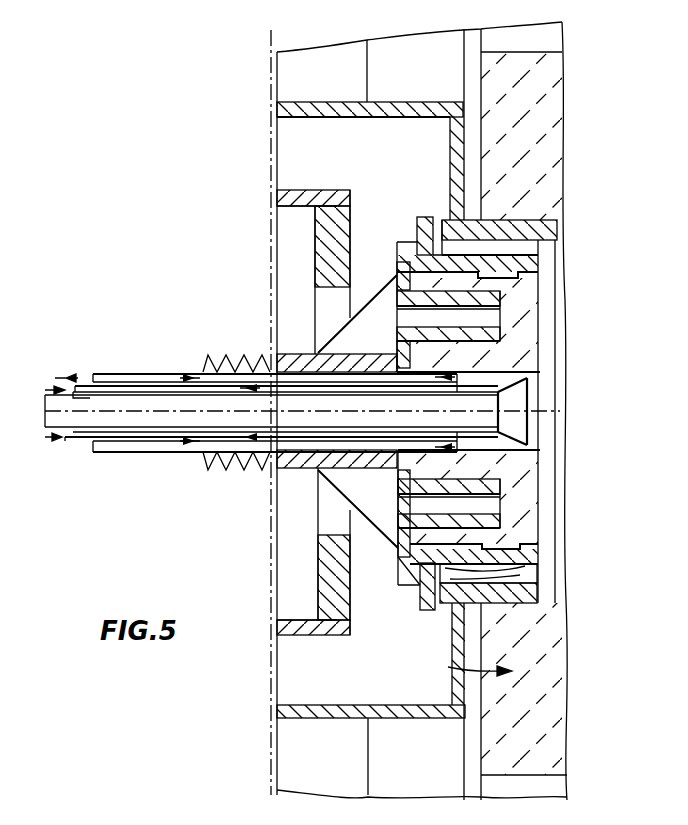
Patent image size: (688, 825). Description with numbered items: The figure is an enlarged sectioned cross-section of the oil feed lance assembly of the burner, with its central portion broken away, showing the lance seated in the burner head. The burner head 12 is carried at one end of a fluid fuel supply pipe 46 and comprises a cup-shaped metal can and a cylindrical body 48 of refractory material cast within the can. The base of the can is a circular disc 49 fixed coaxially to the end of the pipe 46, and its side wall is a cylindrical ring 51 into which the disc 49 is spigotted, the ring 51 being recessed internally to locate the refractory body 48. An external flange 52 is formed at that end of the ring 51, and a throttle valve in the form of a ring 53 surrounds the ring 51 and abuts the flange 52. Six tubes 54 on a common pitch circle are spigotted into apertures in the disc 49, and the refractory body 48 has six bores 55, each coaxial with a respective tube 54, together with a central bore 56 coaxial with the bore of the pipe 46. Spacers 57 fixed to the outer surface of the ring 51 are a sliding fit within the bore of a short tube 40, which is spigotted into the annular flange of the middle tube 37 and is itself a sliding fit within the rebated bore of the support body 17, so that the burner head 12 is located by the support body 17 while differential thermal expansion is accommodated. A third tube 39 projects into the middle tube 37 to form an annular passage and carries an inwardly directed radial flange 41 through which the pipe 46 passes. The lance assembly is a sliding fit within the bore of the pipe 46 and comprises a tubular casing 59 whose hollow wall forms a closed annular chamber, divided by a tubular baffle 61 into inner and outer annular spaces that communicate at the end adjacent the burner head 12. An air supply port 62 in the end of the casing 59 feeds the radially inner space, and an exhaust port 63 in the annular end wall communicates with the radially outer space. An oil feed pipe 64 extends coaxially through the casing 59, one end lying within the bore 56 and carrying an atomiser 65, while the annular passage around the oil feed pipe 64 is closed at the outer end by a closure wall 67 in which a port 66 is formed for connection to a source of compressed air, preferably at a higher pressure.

The burner head 12 is at (537, 353).
The support body 17 is at (468, 671).
The middle tube 37 is at (360, 713).
The third metal tube 39 is at (307, 630).
The short tube 40 is at (512, 222).
The radial flange 41 is at (340, 230).
The fluid fuel supply pipe 46 is at (367, 368).
The cylindrical body of refractory material 48 is at (522, 487).
The circular disc 49 is at (400, 547).
The cylindrical ring 51 is at (523, 556).
The external flange 52 is at (412, 586).
The throttle valve ring 53 is at (427, 611).
The tubes 54 is at (408, 298).
The bores 55 is at (505, 297).
The central bore 56 is at (504, 452).
The spacers 57 is at (530, 577).
The tubular casing 59 is at (115, 376).
The tubular baffle 61 is at (170, 385).
The air supply port 62 is at (80, 397).
The exhaust port 63 is at (92, 375).
The oil feed pipe 64 is at (520, 400).
The atomiser 65 is at (523, 422).
The port 66 is at (80, 441).
The closure wall 67 is at (82, 399).